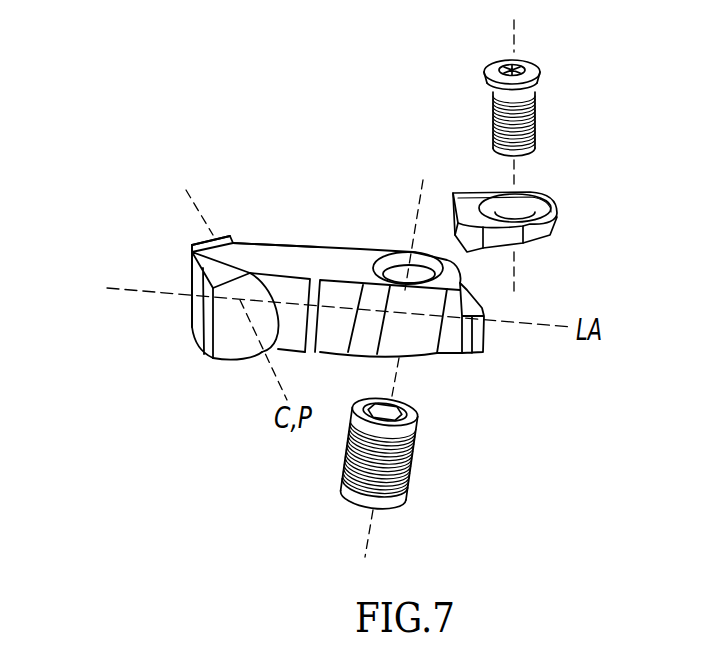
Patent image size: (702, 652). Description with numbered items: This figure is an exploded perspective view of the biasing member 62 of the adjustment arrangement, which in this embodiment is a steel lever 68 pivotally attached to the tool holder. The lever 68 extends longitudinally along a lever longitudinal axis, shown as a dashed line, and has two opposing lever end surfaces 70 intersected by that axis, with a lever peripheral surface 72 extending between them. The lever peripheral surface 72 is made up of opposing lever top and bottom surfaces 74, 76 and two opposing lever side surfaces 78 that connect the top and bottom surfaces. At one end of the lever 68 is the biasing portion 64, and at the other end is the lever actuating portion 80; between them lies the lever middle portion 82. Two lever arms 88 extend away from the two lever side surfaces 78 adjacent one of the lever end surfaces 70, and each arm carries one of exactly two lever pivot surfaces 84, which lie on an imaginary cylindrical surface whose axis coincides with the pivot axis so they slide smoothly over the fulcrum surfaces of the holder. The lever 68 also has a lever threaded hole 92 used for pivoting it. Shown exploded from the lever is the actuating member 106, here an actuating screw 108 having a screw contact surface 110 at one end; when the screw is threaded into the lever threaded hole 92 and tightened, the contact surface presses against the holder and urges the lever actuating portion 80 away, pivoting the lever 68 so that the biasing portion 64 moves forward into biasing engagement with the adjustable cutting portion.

The biasing member 62 is at (313, 279).
The lever 68 is at (313, 279).
The biasing portion 64 is at (190, 252).
The lever end surfaces 70 is at (485, 332).
The lever peripheral surface 72 is at (352, 237).
The lever top surface 74 is at (263, 250).
The lever bottom surface 76 is at (423, 367).
The lever side surfaces 78 is at (333, 318).
The lever actuating portion 80 is at (454, 271).
The lever middle portion 82 is at (362, 308).
The lever pivot surface 84 is at (265, 350).
The lever arms 88 is at (220, 226).
The lever threaded hole 92 is at (427, 265).
The actuating member 106 is at (478, 493).
The actuating screw 108 is at (478, 493).
The screw contact surface 110 is at (418, 482).